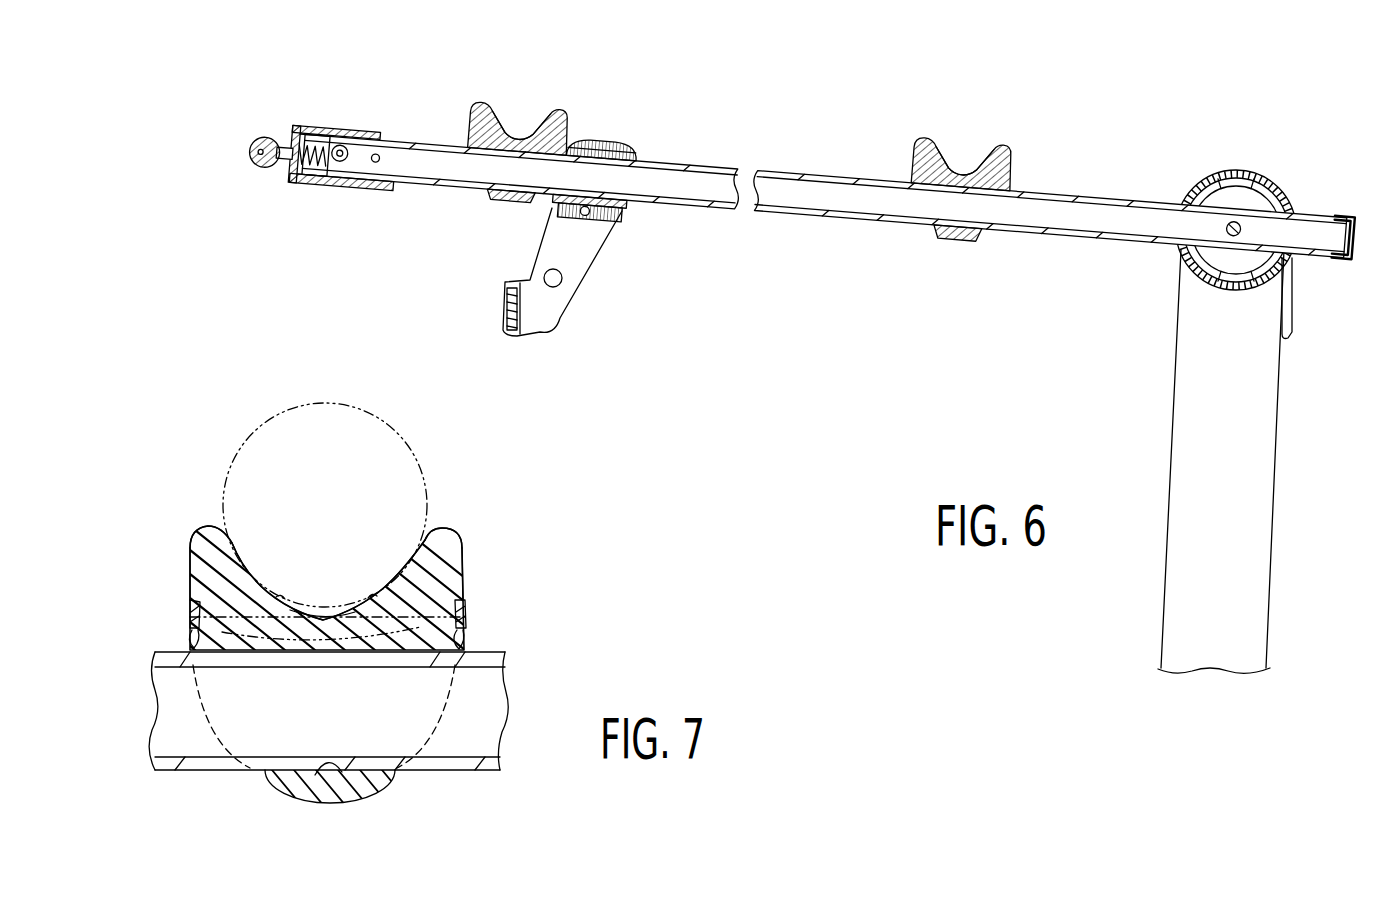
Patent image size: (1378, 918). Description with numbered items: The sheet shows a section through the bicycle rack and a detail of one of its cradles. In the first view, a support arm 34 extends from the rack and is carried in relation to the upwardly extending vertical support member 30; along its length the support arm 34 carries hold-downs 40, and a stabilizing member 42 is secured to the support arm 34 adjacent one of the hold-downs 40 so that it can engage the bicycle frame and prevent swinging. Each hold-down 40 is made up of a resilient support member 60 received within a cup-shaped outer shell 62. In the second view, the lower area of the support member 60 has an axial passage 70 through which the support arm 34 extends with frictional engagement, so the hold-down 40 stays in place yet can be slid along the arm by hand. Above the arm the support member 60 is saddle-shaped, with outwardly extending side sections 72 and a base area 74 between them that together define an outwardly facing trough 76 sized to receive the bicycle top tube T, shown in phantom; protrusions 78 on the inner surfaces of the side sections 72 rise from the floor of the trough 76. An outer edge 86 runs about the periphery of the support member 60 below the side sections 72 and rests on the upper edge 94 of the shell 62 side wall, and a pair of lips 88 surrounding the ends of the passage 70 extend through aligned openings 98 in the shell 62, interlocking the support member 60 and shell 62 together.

In FIG. 6, the vertical support member 30 is at (1172, 393).
In FIG. 6, the support arm 34 is at (863, 173).
In FIG. 7, the support arm 34 is at (470, 770).
In FIG. 6, the hold-down 40 is at (461, 108).
In FIG. 6, the stabilizing member 42 is at (613, 254).
In FIG. 6, the resilient support member 60 is at (565, 109).
In FIG. 7, the resilient support member 60 is at (447, 532).
In FIG. 6, the outer shell 62 is at (508, 204).
In FIG. 7, the outer shell 62 is at (302, 803).
In FIG. 7, the axial passage 70 is at (322, 768).
In FIG. 7, the side sections 72 is at (200, 562).
In FIG. 7, the base area 74 is at (321, 627).
In FIG. 6, the trough 76 is at (514, 134).
In FIG. 7, the trough 76 is at (307, 605).
In FIG. 7, the protrusions 78 is at (283, 598).
In FIG. 7, the outer edge 86 is at (188, 617).
In FIG. 7, the lips 88 is at (192, 645).
In FIG. 7, the upper edge 94 is at (188, 585).
In FIG. 7, the openings 98 is at (193, 655).
In FIG. 7, the top tube T is at (420, 430).